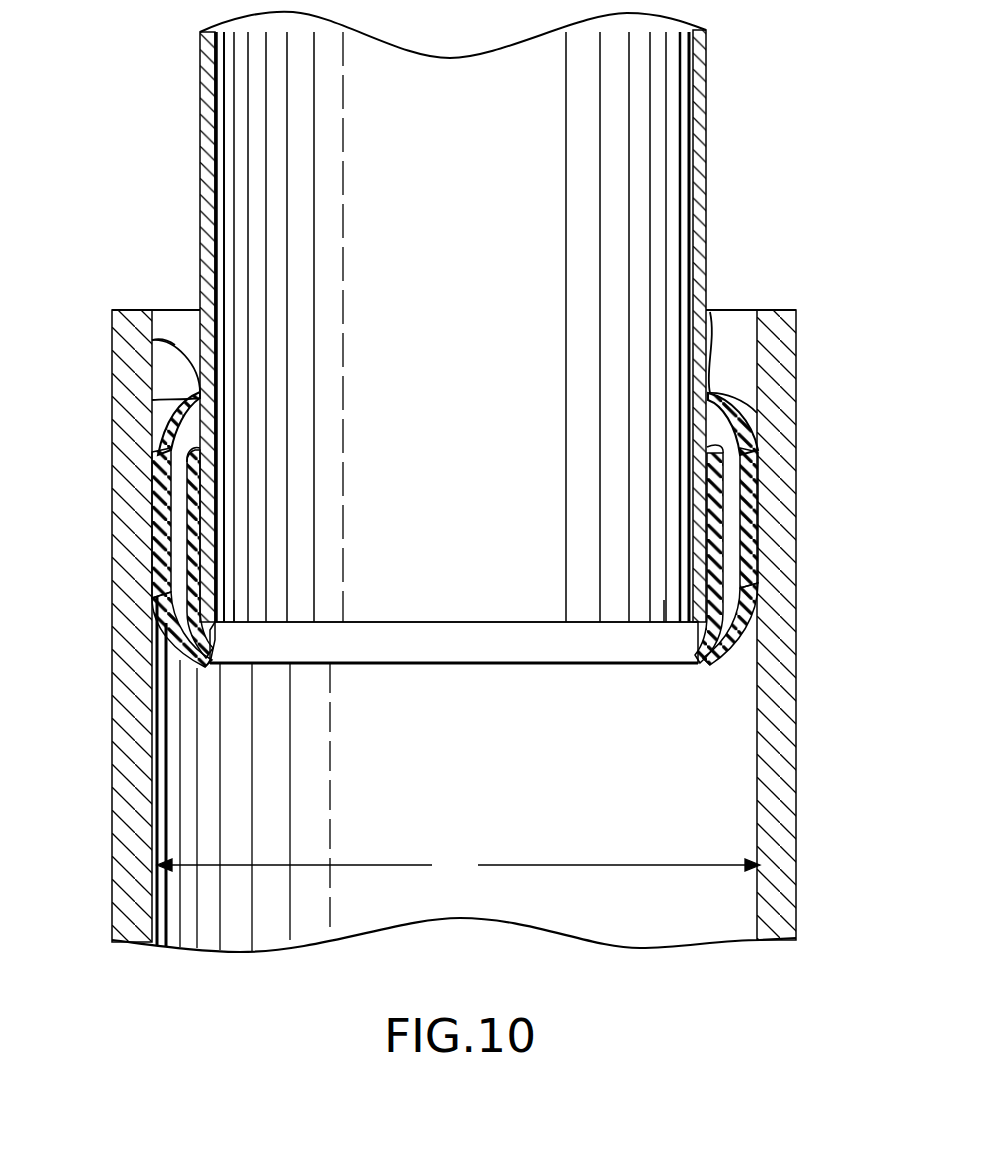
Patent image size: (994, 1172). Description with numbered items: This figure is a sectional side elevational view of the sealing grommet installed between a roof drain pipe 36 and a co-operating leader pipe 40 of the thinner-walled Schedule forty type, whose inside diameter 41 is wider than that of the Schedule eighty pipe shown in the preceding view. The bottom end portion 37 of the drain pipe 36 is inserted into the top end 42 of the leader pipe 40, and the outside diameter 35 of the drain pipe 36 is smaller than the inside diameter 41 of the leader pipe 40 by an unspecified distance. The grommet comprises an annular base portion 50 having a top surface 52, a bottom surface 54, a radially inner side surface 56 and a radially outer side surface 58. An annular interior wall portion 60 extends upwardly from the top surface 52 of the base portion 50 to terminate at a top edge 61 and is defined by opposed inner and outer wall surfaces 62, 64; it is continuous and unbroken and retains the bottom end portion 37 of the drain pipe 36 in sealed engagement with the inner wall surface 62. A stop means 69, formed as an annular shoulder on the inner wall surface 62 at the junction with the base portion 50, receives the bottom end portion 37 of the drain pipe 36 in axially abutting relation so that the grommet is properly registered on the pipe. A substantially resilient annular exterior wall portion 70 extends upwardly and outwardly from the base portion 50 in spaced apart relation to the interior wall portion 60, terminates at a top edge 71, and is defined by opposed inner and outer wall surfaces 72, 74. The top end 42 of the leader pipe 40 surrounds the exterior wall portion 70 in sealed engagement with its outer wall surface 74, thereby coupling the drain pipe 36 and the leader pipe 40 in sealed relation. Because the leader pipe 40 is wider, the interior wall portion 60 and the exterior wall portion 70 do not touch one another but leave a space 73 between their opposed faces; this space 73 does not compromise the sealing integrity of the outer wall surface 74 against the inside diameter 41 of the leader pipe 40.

The outside diameter of the drain pipe 35 is at (190, 118).
The drain pipe 36 is at (700, 147).
The bottom end portion of the drain pipe 37 is at (700, 552).
The leader pipe 40 is at (787, 855).
The inside diameter of the leader pipe 41 is at (458, 866).
The end face of outer tube 42 is at (795, 333).
The annular base portion 50 is at (208, 665).
The top surface 52 is at (216, 606).
The bottom surface 54 is at (422, 663).
The radially inner side surface 56 is at (217, 638).
The radially outer side surface 58 is at (180, 665).
The annular interior wall portion 60 is at (213, 482).
The top edge 61 is at (200, 440).
The inner wall surface 62 is at (200, 513).
The outer wall surface 64 is at (202, 406).
The stop means 69 is at (287, 622).
The annular exterior wall portion 70 is at (153, 400).
The top edge 71 is at (158, 344).
The inner wall surface 72 is at (152, 512).
The space 73 is at (745, 493).
The outer wall surface 74 is at (152, 500).